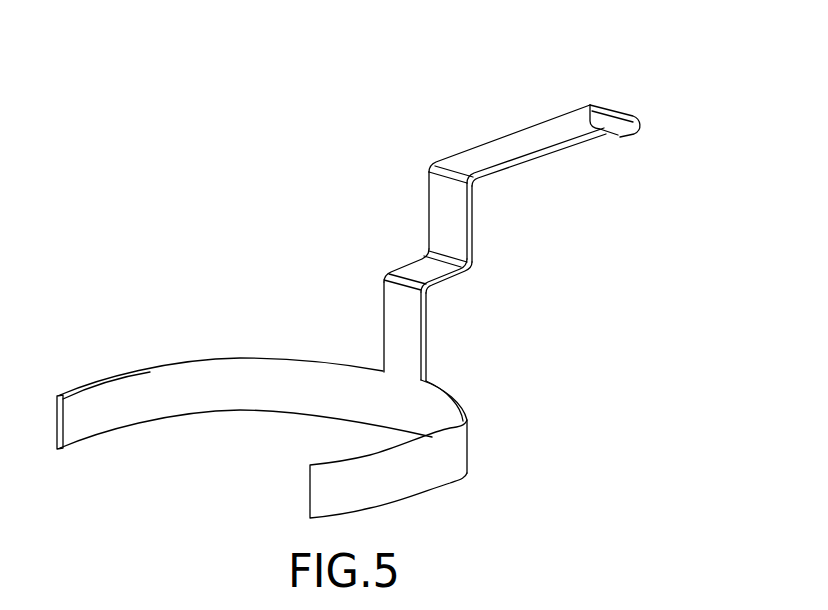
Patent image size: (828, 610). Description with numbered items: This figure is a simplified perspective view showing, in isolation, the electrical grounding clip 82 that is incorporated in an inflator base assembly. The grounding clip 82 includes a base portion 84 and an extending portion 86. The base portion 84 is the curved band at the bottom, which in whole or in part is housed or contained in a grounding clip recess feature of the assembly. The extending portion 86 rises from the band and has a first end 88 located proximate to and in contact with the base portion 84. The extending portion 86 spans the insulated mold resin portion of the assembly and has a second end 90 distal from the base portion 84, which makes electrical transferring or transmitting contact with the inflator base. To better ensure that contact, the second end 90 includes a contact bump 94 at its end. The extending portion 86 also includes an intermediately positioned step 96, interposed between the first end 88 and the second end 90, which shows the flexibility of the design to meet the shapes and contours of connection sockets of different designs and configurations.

The grounding clip 82 is at (258, 278).
The base portion 84 is at (108, 413).
The extending portion 86 is at (474, 219).
The first end 88 is at (427, 366).
The second end 90 is at (528, 93).
The contact bump 94 is at (620, 134).
The step 96 is at (388, 218).